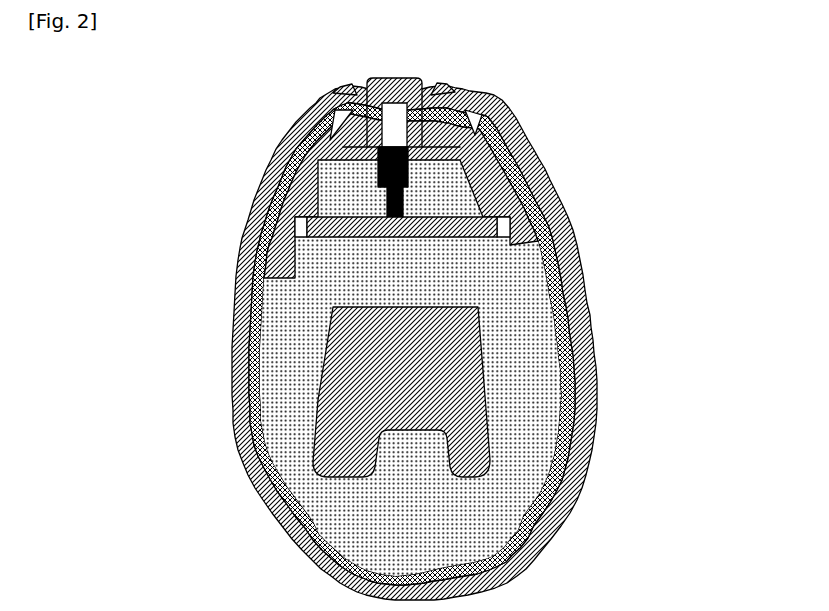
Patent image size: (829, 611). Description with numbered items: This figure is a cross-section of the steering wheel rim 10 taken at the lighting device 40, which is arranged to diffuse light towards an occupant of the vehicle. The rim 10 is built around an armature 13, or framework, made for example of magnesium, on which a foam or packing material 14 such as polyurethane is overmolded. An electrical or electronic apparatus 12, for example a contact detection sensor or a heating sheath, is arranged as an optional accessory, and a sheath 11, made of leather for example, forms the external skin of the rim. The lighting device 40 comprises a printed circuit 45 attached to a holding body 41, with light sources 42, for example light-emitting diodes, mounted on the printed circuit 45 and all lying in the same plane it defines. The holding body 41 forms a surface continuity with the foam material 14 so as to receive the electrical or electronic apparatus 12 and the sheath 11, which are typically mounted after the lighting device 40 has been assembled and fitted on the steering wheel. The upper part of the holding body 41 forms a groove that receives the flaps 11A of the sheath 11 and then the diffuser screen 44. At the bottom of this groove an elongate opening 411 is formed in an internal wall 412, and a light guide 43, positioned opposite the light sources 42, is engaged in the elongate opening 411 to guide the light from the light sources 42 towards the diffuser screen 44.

The rim 10 is at (313, 331).
The sheath 11 is at (352, 331).
The flaps of the sheath 11A is at (360, 93).
The electrical or electronic apparatus 12 is at (262, 245).
The armature 13 is at (322, 368).
The foam or packing material 14 is at (300, 397).
The lighting device 40 is at (469, 169).
The holding body 41 is at (422, 186).
The elongate opening 411 is at (362, 139).
The internal wall 412 is at (343, 161).
The light sources 42 is at (403, 202).
The light guide 43 is at (410, 158).
The diffuser screen 44 is at (420, 86).
The printed circuit 45 is at (403, 230).